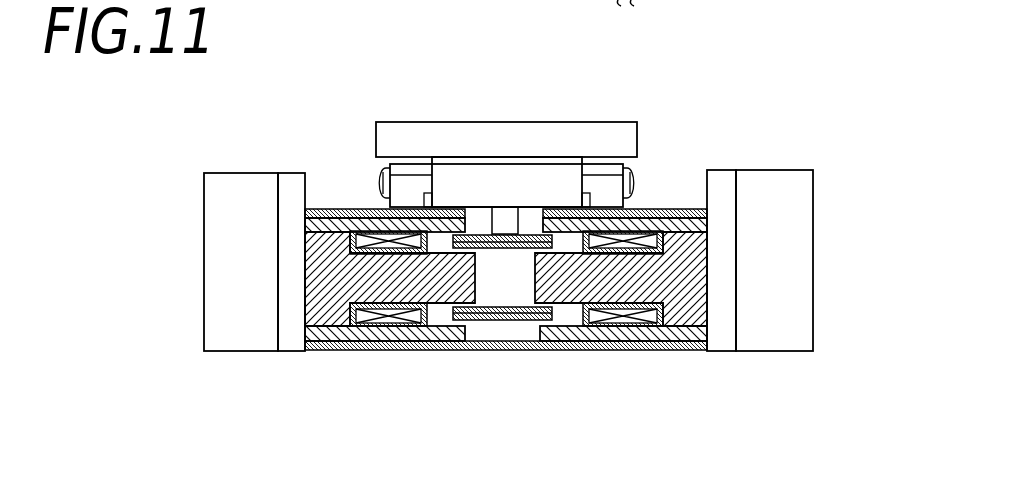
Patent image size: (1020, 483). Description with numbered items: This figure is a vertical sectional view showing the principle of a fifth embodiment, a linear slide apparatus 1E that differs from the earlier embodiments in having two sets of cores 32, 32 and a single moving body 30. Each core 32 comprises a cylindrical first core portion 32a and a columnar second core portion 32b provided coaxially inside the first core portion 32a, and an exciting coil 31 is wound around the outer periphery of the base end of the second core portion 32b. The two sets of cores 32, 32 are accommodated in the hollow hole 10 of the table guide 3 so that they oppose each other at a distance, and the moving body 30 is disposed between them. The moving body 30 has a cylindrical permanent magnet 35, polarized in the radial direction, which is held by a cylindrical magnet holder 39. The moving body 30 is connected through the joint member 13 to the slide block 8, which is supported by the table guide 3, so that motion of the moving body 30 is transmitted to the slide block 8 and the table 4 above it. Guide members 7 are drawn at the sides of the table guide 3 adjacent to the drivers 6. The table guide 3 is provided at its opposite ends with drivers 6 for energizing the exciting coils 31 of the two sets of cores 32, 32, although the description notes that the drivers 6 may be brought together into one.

The linear slide apparatus 1E is at (803, 93).
The table guide 3 is at (683, 343).
The movable table 4 is at (412, 119).
The driver 6 is at (243, 198).
The guide member 7 is at (291, 193).
The slide block 8 is at (547, 182).
The hollow hole 10 is at (697, 332).
The joint member 13 is at (504, 220).
The moving body 30 is at (499, 345).
The exciting coil 31 is at (363, 238).
The core 32 is at (491, 368).
The first core portion 32a is at (506, 351).
The second core portion 32b is at (370, 283).
The permanent magnet 35 is at (482, 312).
The magnet holder 39 is at (518, 312).